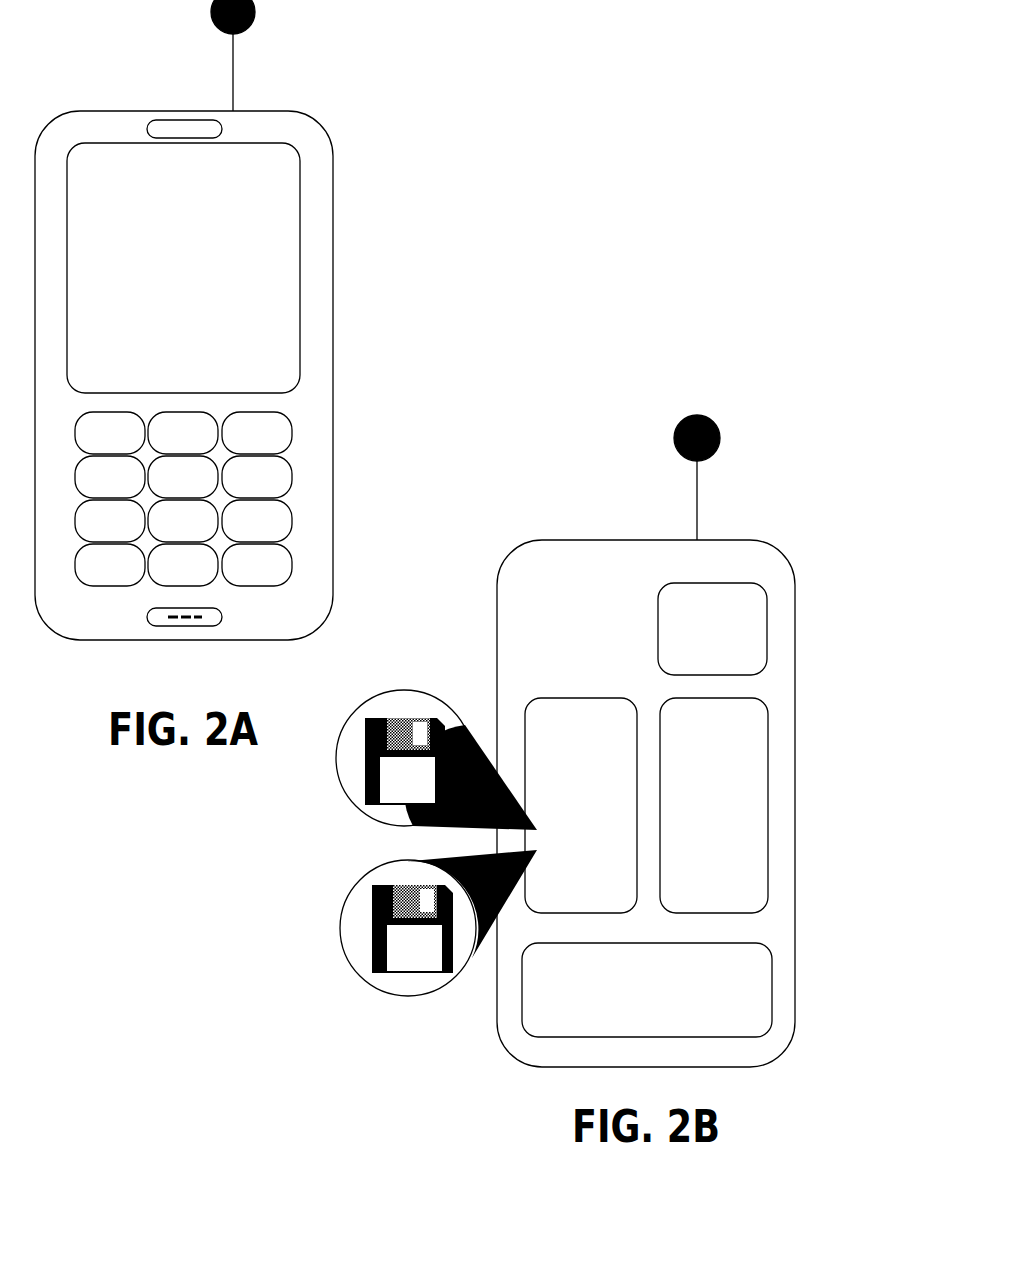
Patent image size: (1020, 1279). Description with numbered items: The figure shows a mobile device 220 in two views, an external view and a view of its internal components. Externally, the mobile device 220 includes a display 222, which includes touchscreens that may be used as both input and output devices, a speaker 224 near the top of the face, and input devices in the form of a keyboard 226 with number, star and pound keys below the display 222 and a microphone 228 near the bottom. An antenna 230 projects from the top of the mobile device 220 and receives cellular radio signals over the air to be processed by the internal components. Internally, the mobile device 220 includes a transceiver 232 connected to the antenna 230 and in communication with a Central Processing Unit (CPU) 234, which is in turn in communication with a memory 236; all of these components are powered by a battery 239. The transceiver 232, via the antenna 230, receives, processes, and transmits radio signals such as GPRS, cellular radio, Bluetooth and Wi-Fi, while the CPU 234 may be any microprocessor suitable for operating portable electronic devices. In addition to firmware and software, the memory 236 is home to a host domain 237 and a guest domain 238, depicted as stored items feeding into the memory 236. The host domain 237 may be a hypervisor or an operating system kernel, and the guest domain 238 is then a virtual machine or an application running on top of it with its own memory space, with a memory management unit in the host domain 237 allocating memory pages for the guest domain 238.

In FIG. 2A, the mobile device 220 is at (184, 351).
In FIG. 2B, the mobile device 220 is at (666, 780).
In FIG. 2A, the display 222 is at (246, 268).
In FIG. 2A, the speaker 224 is at (150, 150).
In FIG. 2A, the keyboard 226 is at (245, 499).
In FIG. 2A, the microphone 228 is at (132, 648).
In FIG. 2A, the antenna 230 is at (278, 55).
In FIG. 2B, the antenna 230 is at (737, 460).
In FIG. 2B, the transceiver 232 is at (650, 584).
In FIG. 2B, the Central Processing Unit (CPU) 234 is at (778, 805).
In FIG. 2B, the memory 236 is at (520, 778).
In FIG. 2B, the host domain 237 is at (399, 767).
In FIG. 2B, the guest domain 238 is at (391, 923).
In FIG. 2B, the battery 239 is at (710, 981).